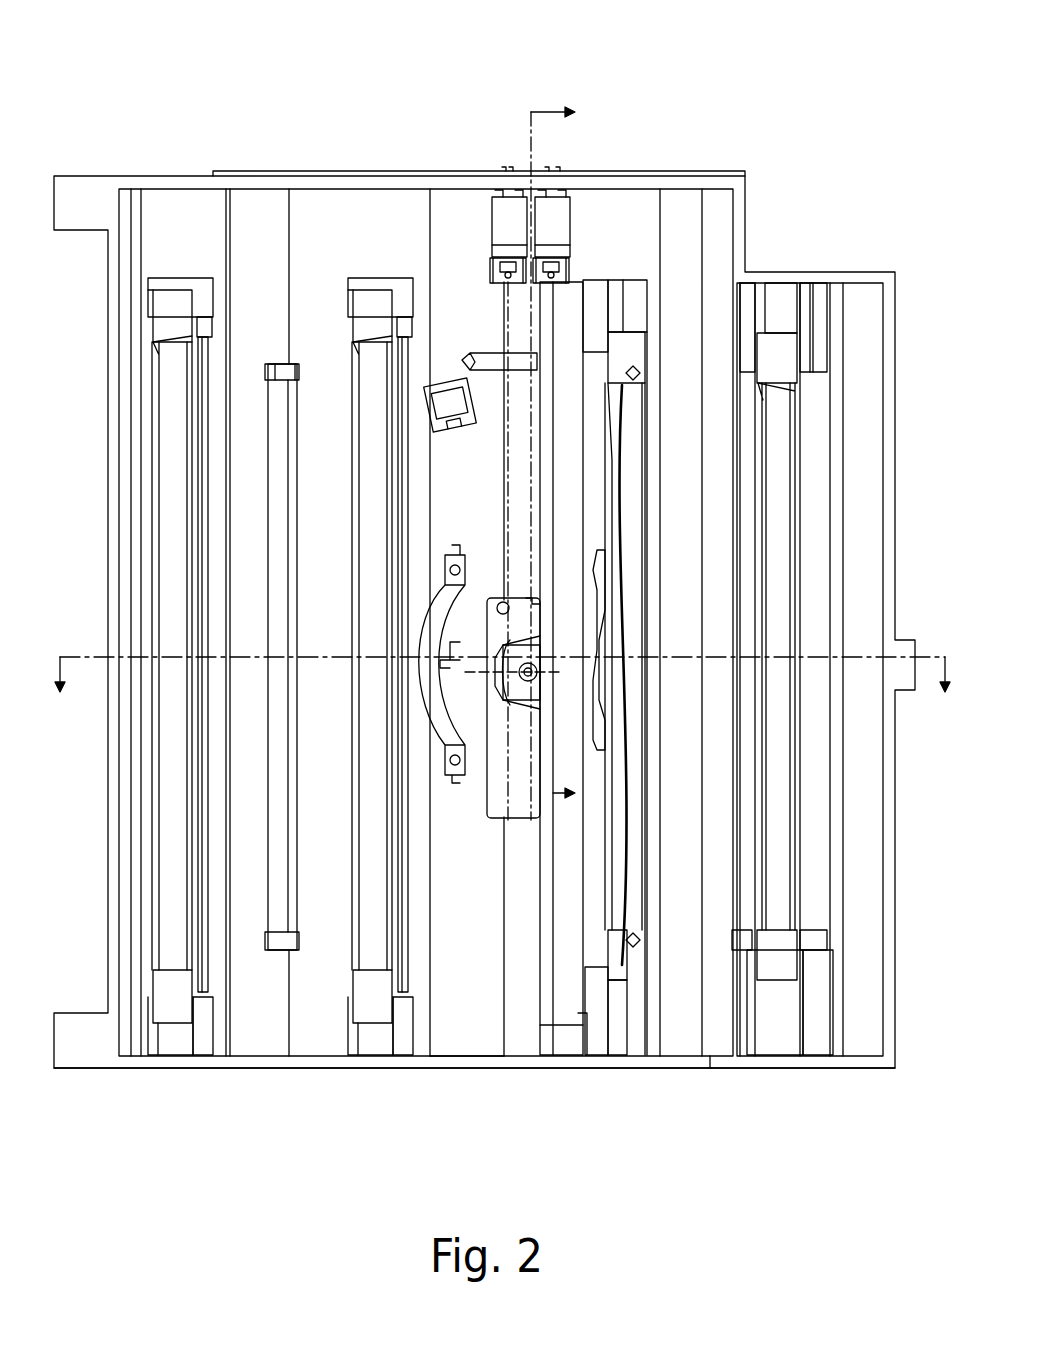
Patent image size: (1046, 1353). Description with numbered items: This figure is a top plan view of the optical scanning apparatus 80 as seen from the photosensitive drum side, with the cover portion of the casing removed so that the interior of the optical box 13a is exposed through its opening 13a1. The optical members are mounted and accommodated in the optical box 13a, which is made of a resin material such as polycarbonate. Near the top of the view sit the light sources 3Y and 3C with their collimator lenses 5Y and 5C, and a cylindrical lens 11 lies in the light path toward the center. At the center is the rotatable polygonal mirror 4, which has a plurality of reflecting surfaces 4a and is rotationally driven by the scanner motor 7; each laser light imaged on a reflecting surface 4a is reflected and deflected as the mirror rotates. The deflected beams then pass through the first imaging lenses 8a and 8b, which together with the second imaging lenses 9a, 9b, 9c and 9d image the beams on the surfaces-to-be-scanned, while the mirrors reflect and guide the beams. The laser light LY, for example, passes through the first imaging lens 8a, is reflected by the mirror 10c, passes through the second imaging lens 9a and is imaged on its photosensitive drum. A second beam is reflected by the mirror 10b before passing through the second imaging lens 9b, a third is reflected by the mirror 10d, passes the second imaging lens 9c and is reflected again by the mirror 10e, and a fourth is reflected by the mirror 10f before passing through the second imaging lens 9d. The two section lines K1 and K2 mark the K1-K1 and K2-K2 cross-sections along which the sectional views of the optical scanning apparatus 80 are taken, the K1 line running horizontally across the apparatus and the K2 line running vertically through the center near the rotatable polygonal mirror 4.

The optical scanning apparatus 80 is at (92, 405).
The optical box 13a is at (378, 1070).
The opening 13a1 is at (462, 1016).
The second imaging lens 9a is at (178, 302).
The mirror 10c is at (204, 322).
The mirror 10d is at (268, 365).
The second imaging lens 9b is at (366, 300).
The mirror 10b is at (402, 322).
The cylindrical lens 11 is at (472, 354).
The light source 3Y is at (508, 192).
The light source 3C is at (552, 190).
The collimator lens 5Y is at (496, 258).
The collimator lens 5C is at (568, 266).
The laser light LY is at (508, 530).
The K2-K2 cross-section K2 is at (570, 464).
The K1-K1 cross-section K1 is at (501, 697).
The scanner motor 7 is at (490, 796).
The rotatable polygonal mirror 4 is at (520, 686).
The reflecting surface 4a is at (505, 660).
The first imaging lens 8a is at (450, 762).
The mirror 10e is at (560, 1027).
The second imaging lens 9c is at (626, 338).
The first imaging lens 8b is at (597, 555).
The second imaging lens 9d is at (778, 342).
The mirror 10f is at (806, 370).